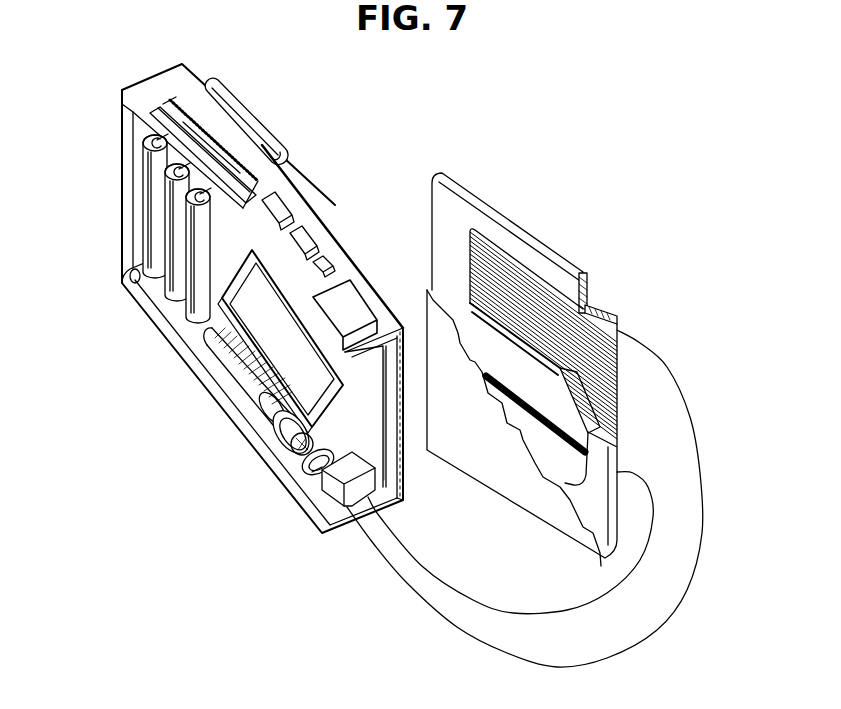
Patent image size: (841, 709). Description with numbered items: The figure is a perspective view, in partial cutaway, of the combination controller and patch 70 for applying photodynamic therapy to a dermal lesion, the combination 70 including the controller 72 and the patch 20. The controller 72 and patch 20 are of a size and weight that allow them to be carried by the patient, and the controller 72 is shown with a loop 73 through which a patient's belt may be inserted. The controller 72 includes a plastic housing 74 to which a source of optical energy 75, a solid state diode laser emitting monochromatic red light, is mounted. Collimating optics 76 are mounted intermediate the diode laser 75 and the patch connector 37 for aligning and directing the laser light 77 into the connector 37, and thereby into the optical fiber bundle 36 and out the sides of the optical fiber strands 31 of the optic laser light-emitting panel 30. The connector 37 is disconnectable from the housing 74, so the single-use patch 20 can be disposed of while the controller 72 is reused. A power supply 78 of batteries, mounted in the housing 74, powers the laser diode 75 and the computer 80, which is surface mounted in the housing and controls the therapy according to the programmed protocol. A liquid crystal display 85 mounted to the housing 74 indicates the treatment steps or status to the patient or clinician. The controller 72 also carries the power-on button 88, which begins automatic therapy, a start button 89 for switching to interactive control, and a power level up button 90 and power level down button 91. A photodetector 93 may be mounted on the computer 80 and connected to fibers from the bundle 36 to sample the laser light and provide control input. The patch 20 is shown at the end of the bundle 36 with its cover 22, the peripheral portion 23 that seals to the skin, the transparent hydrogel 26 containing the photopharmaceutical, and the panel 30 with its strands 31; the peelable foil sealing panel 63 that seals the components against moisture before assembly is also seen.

The patch 20 is at (603, 241).
The cover 22 is at (470, 185).
The peripheral portion 23 is at (590, 280).
The transparent hydrogel 26 is at (618, 398).
The optic laser light-emitting panel 30 is at (618, 378).
The optical fiber strands 31 is at (618, 316).
The optical fiber bundle 36 is at (636, 645).
The optical fiber connector 37 is at (338, 510).
The foil sealing panel 63 is at (560, 545).
The combination controller and patch 70 is at (298, 193).
The controller 72 is at (199, 384).
The loop 73 is at (233, 86).
The housing 74 is at (132, 88).
The source of optical energy 75 is at (280, 437).
The collimating optics 76 is at (322, 482).
The optical energy 77 is at (300, 455).
The power supply 78 is at (163, 254).
The computer 80 is at (394, 431).
The liquid crystal display 85 is at (220, 323).
The power-on button 88 is at (352, 296).
The start button 89 is at (332, 259).
The power level up button 90 is at (310, 232).
The power level down button 91 is at (292, 208).
The photodetector 93 is at (398, 503).